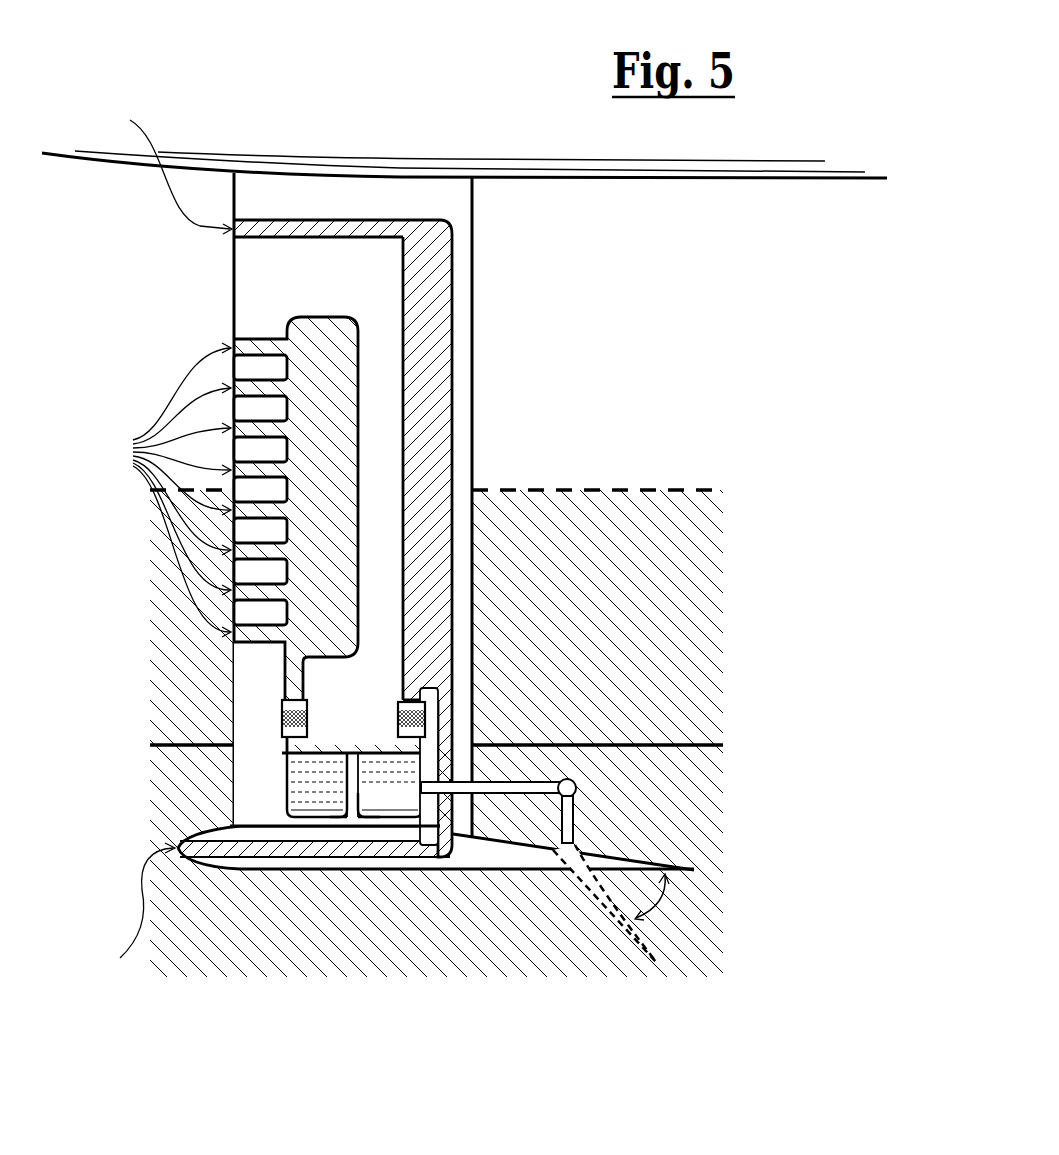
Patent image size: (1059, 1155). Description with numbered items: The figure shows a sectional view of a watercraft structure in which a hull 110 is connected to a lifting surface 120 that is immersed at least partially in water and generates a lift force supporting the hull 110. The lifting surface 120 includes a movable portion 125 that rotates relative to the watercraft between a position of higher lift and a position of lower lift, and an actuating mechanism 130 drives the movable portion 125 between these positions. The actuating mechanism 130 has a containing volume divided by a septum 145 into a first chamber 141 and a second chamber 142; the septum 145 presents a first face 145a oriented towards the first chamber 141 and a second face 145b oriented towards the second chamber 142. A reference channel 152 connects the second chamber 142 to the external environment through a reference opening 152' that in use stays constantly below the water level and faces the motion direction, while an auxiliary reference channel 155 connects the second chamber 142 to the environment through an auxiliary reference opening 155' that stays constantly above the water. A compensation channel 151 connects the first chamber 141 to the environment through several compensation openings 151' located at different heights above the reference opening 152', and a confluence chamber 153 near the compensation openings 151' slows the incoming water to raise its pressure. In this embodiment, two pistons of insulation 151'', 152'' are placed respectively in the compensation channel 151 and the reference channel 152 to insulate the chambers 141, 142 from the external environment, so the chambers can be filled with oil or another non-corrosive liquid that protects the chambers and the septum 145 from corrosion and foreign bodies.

The hull 110 is at (630, 178).
The lifting surface 120 is at (372, 917).
The movable portion 125 is at (600, 897).
The actuating mechanism 130 is at (505, 768).
The first chamber 141 is at (312, 752).
The second chamber 142 is at (412, 768).
The septum 145 is at (352, 753).
The first face 145a is at (340, 810).
The second face 145b is at (370, 802).
The compensation channel 151 is at (191, 734).
The compensation openings 151' is at (186, 490).
The piston of insulation 151'' is at (187, 717).
The reference channel 152 is at (421, 920).
The reference opening 152' is at (125, 914).
The piston of insulation 152'' is at (486, 698).
The confluence chamber 153 is at (327, 447).
The auxiliary reference channel 155 is at (337, 156).
The auxiliary reference opening 155' is at (158, 169).